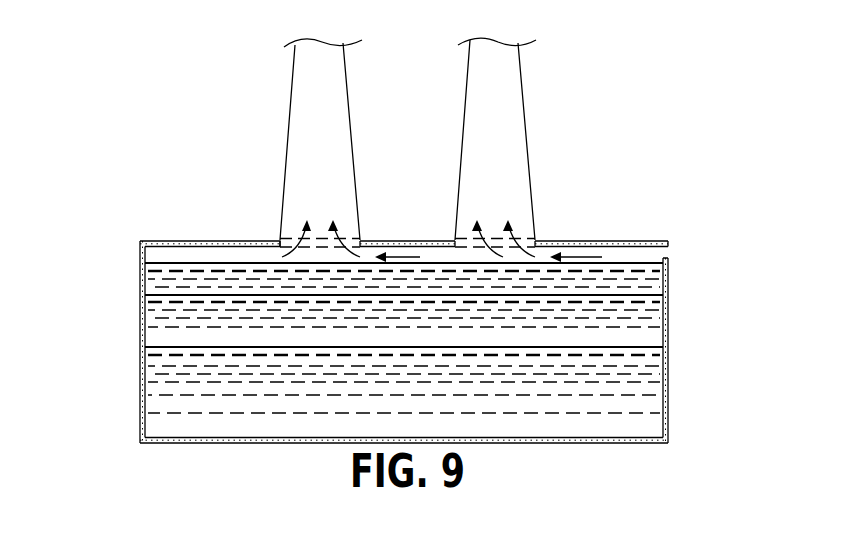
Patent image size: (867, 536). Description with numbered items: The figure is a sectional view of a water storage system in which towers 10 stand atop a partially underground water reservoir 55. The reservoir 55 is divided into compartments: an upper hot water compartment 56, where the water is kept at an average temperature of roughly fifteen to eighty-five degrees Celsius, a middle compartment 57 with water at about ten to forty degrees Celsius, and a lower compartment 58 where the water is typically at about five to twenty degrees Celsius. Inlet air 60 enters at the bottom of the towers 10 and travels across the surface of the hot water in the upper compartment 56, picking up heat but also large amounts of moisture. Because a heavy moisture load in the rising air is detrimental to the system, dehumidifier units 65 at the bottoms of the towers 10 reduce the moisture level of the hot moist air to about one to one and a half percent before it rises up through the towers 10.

The tower 10 is at (552, 103).
The water reservoir 55 is at (128, 297).
The upper hot water compartment 56 is at (657, 278).
The middle compartment 57 is at (657, 322).
The lower compartment 58 is at (657, 405).
The inlet air 60 is at (635, 257).
The dehumidifier unit 65 is at (293, 237).